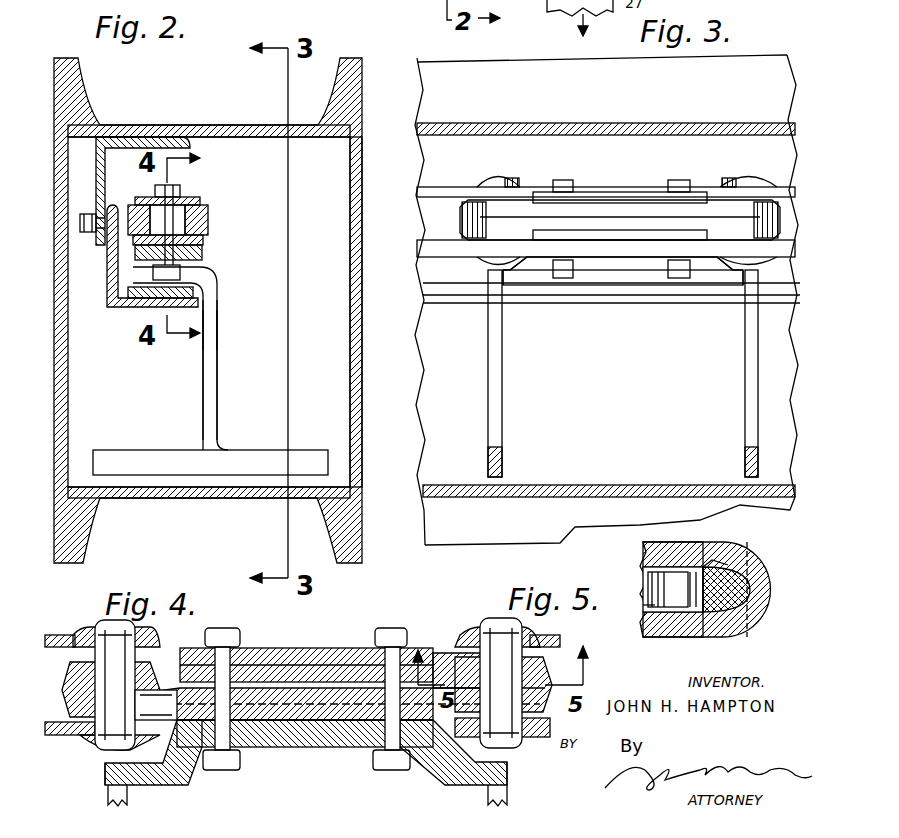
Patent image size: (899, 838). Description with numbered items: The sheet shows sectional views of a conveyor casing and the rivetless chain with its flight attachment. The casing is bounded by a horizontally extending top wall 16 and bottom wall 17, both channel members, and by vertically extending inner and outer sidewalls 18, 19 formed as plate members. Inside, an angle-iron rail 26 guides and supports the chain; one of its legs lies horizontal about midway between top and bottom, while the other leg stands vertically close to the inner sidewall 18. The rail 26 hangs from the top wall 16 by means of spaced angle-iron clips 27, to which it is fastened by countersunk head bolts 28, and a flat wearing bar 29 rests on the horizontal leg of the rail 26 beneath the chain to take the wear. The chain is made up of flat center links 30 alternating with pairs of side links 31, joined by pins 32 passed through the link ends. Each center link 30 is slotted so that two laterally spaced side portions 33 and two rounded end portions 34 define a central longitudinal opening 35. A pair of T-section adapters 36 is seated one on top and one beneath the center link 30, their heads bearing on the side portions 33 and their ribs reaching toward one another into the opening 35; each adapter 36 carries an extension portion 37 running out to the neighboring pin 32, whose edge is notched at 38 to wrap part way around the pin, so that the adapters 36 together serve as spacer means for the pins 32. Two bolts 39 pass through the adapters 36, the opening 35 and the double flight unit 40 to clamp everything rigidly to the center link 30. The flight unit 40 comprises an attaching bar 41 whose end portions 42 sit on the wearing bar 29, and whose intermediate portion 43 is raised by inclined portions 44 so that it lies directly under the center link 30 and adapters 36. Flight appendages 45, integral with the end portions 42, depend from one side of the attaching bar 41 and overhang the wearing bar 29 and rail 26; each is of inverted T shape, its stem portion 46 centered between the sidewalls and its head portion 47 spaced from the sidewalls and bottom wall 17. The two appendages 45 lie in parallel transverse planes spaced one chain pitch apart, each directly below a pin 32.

In FIG. 2, the top wall 16 is at (243, 125).
In FIG. 2, the bottom wall 17 is at (235, 498).
In FIG. 3, the bottom wall 17 is at (590, 485).
In FIG. 2, the inner sidewall 18 is at (67, 393).
In FIG. 2, the outer sidewall 19 is at (350, 280).
In FIG. 2, the angle-iron track or rail 26 is at (112, 308).
In FIG. 3, the angle-iron track or rail 26 is at (482, 300).
In FIG. 2, the angle-iron clip 27 is at (92, 192).
In FIG. 2, the countersunk head bolt 28 is at (94, 236).
In FIG. 2, the flat bar member (wear plate) 29 is at (200, 298).
In FIG. 3, the flat bar member (wear plate) 29 is at (466, 290).
In FIG. 2, the center link 30 is at (202, 223).
In FIG. 3, the center link 30 is at (608, 215).
In FIG. 4, the center link 30 is at (316, 694).
In FIG. 5, the center link 30 is at (724, 577).
In FIG. 3, the side link 31 is at (452, 187).
In FIG. 4, the side link 31 is at (58, 635).
In FIG. 3, the pin 32 is at (490, 178).
In FIG. 4, the pin 32 is at (106, 645).
In FIG. 5, the pin 32 is at (735, 587).
In FIG. 4, the side portion 33 is at (280, 665).
In FIG. 5, the side portion 33 is at (662, 543).
In FIG. 5, the rounded end portion 34 is at (770, 570).
In FIG. 2, the central slot or opening 35 is at (188, 203).
In FIG. 4, the central slot or opening 35 is at (165, 665).
In FIG. 5, the central slot or opening 35 is at (668, 580).
In FIG. 2, the adapter 36 is at (208, 230).
In FIG. 3, the adapter 36 is at (590, 192).
In FIG. 4, the adapter 36 is at (318, 648).
In FIG. 5, the adapter 36 is at (643, 603).
In FIG. 4, the adapter extension portion 37 is at (455, 665).
In FIG. 5, the adapter extension portion 37 is at (712, 558).
In FIG. 5, the notch 38 is at (705, 620).
In FIG. 2, the bolt 39 is at (205, 240).
In FIG. 3, the bolt 39 is at (565, 180).
In FIG. 4, the bolt 39 is at (224, 628).
In FIG. 2, the double flight unit 40 is at (210, 371).
In FIG. 3, the double flight unit 40 is at (623, 298).
In FIG. 4, the double flight unit 40 is at (288, 766).
In FIG. 3, the attaching bar 41 is at (640, 258).
In FIG. 3, the end portion of attaching bar 42 is at (508, 275).
In FIG. 4, the end portion of attaching bar 42 is at (110, 777).
In FIG. 3, the intermediate portion of attaching bar 43 is at (582, 255).
In FIG. 4, the intermediate portion of attaching bar 43 is at (265, 750).
In FIG. 3, the inclined portion 44 is at (528, 270).
In FIG. 4, the inclined portion 44 is at (182, 770).
In FIG. 2, the flight appendage 45 is at (218, 336).
In FIG. 3, the flight appendage 45 is at (496, 383).
In FIG. 4, the flight appendage 45 is at (130, 797).
In FIG. 2, the stem portion 46 is at (218, 358).
In FIG. 2, the head portion 47 is at (246, 456).